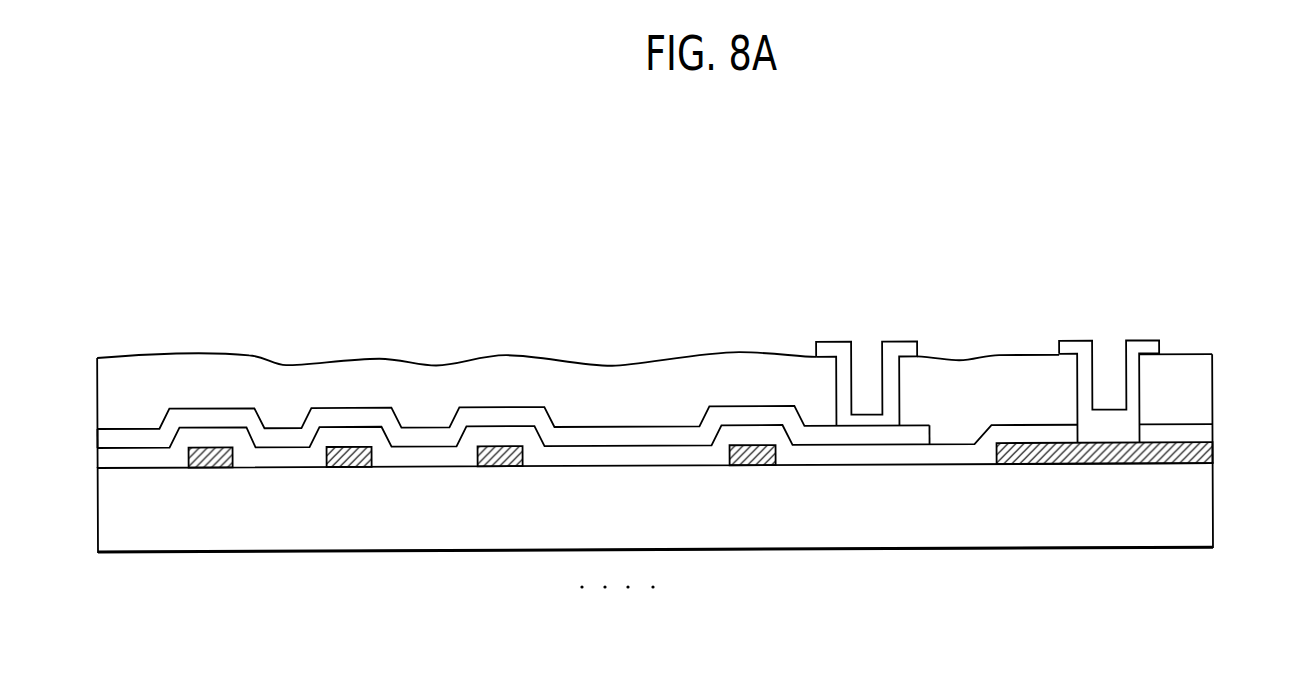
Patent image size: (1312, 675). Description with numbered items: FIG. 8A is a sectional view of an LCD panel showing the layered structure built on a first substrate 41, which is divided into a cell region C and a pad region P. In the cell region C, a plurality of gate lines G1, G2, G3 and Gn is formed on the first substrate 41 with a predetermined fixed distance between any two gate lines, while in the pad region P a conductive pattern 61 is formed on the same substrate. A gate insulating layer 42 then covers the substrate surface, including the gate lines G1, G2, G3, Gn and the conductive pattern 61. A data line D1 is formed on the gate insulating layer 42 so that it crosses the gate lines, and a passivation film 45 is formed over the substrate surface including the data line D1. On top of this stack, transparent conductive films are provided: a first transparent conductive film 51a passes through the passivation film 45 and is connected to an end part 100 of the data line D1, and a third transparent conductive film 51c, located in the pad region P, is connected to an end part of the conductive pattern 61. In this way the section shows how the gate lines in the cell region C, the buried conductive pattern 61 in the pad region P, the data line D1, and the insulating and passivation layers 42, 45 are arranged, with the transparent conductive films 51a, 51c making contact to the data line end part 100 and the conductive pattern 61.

The first substrate 41 is at (1198, 507).
The gate insulating layer 42 is at (1198, 430).
The passivation film 45 is at (1198, 388).
The first transparent conductive film 51a is at (840, 348).
The third transparent conductive film 51c is at (1070, 345).
The conductive pattern 61 is at (1100, 463).
The end part of the data line 100 is at (923, 427).
The data line D1 is at (98, 440).
The gate line G1 is at (212, 468).
The gate line G2 is at (350, 468).
The gate line G3 is at (501, 467).
The gate line Gn is at (747, 464).
The cell region C is at (746, 629).
The pad region P is at (856, 629).